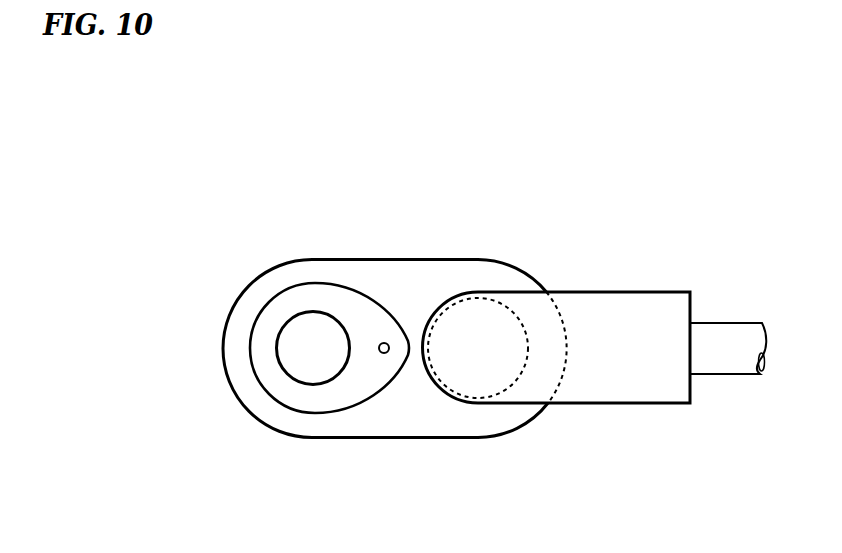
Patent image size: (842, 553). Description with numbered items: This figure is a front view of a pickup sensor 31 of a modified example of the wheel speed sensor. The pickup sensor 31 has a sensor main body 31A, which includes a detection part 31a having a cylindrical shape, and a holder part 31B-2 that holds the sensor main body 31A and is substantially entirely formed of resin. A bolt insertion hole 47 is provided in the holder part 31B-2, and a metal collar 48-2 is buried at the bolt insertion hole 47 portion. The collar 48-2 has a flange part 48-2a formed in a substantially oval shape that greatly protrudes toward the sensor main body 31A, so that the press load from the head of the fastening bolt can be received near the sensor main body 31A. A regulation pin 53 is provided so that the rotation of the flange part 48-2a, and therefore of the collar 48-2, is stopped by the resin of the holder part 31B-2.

The pickup sensor 31 is at (453, 310).
The sensor main body 31A is at (623, 325).
The holder part 31B-2 is at (312, 259).
The detection part 31a is at (507, 307).
The bolt insertion hole 47 is at (283, 360).
The collar 48-2 is at (356, 303).
The flange part 48-2a is at (358, 382).
The regulation pin 53 is at (385, 353).